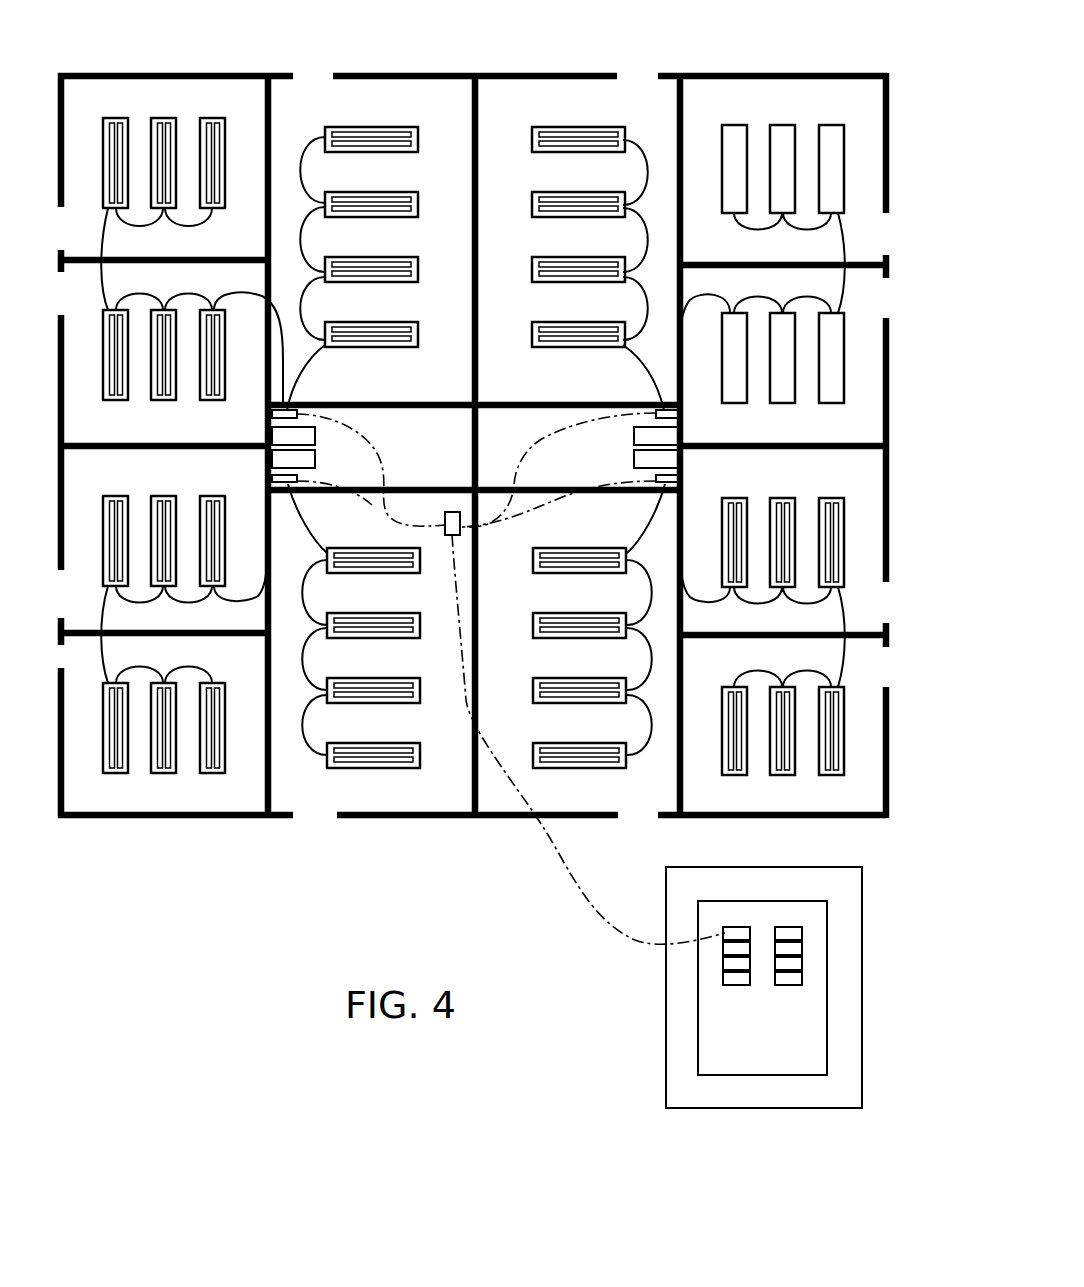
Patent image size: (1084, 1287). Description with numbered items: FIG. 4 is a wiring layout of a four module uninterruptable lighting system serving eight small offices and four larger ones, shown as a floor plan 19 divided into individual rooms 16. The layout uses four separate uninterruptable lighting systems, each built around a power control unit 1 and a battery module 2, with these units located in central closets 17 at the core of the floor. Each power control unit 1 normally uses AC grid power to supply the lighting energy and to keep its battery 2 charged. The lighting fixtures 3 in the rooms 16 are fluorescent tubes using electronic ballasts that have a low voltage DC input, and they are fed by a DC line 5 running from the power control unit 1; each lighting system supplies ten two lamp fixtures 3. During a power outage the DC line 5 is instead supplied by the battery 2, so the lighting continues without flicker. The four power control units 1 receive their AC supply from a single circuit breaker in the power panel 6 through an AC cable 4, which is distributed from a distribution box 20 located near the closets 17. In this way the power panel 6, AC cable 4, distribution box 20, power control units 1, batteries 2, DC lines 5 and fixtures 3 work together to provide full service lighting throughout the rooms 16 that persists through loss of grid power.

The power control unit 1 is at (300, 408).
The battery 2 is at (633, 437).
The lighting fixture 3 is at (110, 118).
The AC cable 4 is at (386, 476).
The DC line 5 is at (200, 225).
The power panel 6 is at (863, 896).
The room 16 is at (78, 452).
The central closet 17 is at (508, 436).
The building floor 19 is at (733, 56).
The distribution box 20 is at (453, 575).